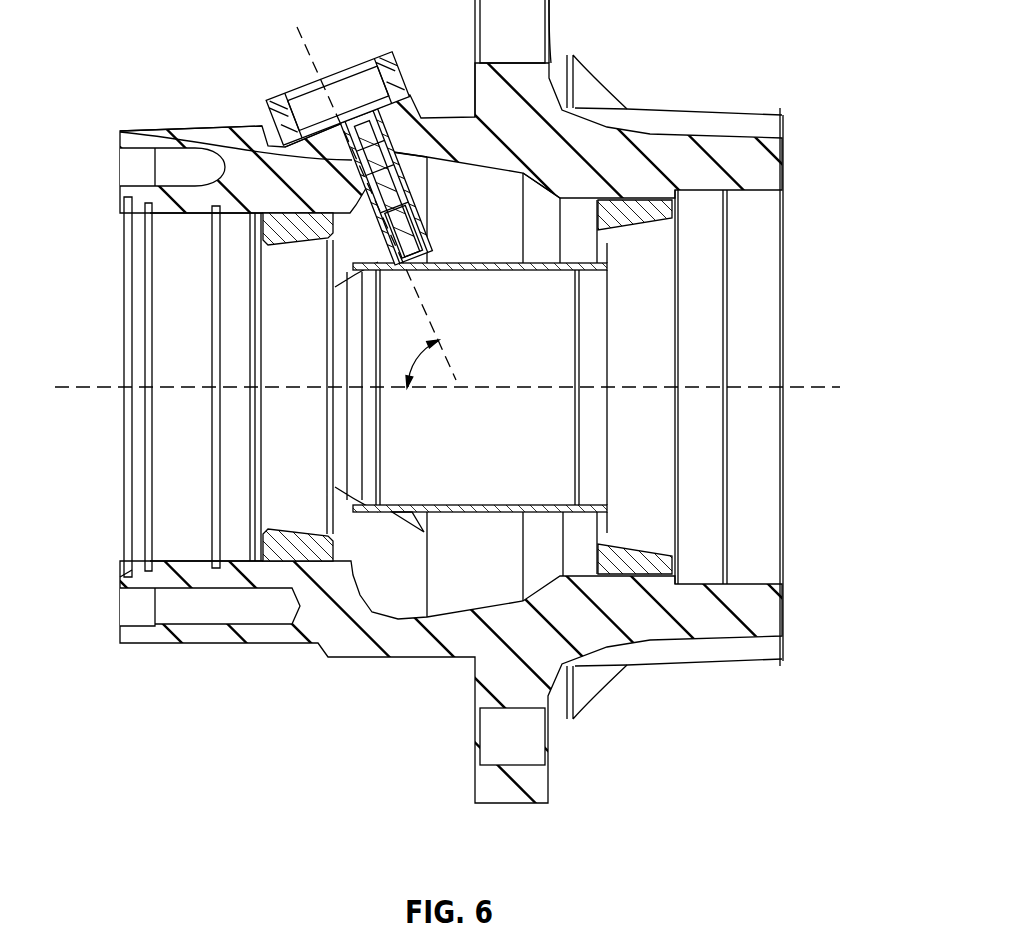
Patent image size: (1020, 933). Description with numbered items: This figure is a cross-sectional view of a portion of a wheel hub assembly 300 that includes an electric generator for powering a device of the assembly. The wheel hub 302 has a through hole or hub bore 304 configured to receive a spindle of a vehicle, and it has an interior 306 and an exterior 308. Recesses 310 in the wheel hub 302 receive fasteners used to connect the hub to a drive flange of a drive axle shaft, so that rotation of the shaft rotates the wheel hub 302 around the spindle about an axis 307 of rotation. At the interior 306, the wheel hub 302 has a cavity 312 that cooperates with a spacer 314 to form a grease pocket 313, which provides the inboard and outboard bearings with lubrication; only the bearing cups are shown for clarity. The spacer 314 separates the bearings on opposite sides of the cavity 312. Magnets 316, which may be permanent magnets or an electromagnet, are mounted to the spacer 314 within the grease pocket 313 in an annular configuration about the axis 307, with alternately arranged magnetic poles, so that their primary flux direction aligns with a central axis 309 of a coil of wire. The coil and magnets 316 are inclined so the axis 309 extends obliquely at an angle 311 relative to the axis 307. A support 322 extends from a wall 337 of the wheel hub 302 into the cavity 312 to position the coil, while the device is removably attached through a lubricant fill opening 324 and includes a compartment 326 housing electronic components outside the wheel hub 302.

The wheel hub assembly 300 is at (677, 40).
The wheel hub 302 is at (763, 125).
The hub bore 304 is at (797, 504).
The interior 306 is at (262, 307).
The axis of rotation 307 is at (80, 388).
The exterior 308 is at (175, 124).
The central axis of coil 309 is at (312, 49).
The recesses 310 is at (127, 168).
The angle 311 is at (426, 362).
The cavity 312 is at (498, 231).
The grease pocket 313 is at (551, 192).
The spacer 314 is at (550, 265).
The magnets 316 is at (410, 255).
The support 322 is at (378, 160).
The lubricant fill opening 324 is at (345, 160).
The compartment 326 is at (392, 66).
The wall 337 is at (145, 139).